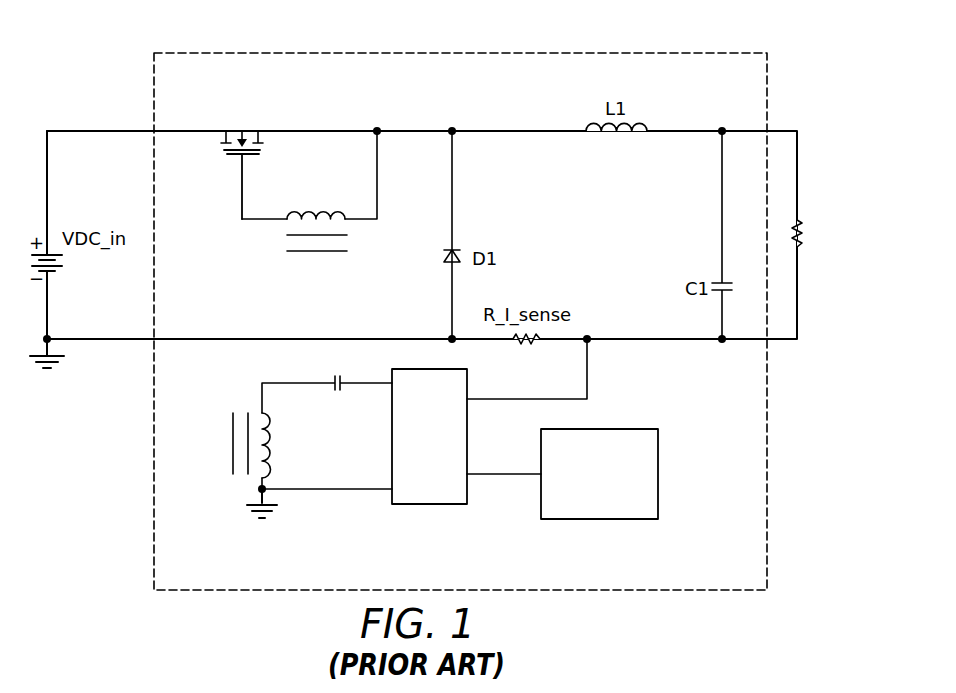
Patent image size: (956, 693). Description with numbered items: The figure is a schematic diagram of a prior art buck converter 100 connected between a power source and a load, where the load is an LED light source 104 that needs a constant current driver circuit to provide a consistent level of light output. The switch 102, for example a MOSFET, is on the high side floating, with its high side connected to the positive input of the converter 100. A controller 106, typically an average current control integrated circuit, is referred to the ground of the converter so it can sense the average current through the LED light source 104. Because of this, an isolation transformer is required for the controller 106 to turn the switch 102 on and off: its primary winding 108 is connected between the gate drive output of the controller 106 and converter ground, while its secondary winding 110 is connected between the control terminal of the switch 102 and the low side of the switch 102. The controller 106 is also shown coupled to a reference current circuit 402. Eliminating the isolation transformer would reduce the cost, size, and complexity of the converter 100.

The buck converter 100 is at (241, 53).
The switch 102 is at (230, 155).
The LED light source 104 is at (797, 222).
The controller 106 is at (430, 504).
The primary winding 108 is at (232, 445).
The secondary winding 110 is at (346, 221).
The reference current circuit 402 is at (598, 519).